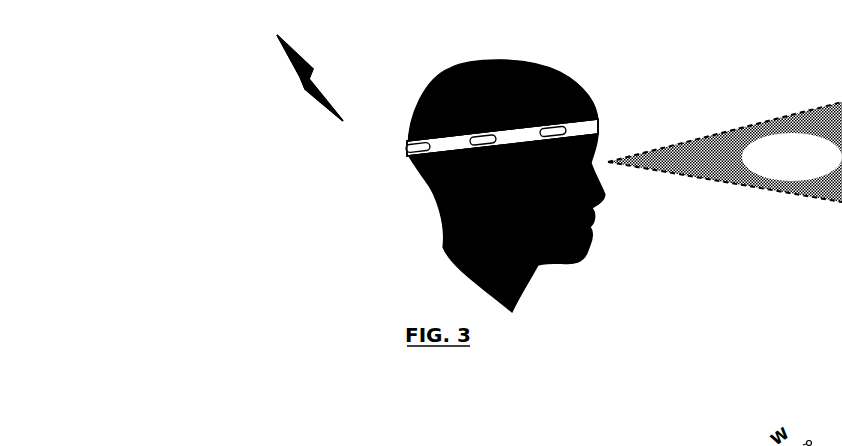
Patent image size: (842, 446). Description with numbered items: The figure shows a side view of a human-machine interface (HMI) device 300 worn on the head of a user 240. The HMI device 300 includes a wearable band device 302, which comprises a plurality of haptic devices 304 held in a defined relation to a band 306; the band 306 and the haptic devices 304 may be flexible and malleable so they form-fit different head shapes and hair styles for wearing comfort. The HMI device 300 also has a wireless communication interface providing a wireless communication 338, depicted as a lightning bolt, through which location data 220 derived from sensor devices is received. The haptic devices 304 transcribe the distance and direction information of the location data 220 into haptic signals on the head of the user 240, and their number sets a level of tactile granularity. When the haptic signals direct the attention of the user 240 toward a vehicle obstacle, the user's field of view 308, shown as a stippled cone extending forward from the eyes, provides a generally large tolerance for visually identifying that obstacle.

The location data 220 is at (339, 86).
The wireless communication 338 is at (283, 103).
The user 240 is at (407, 185).
The wearable band device 302 is at (572, 139).
The haptic devices 304 is at (562, 114).
The band 306 is at (600, 128).
The field of view 308 is at (725, 152).
The human-machine interface (HMI) device 300 is at (458, 275).